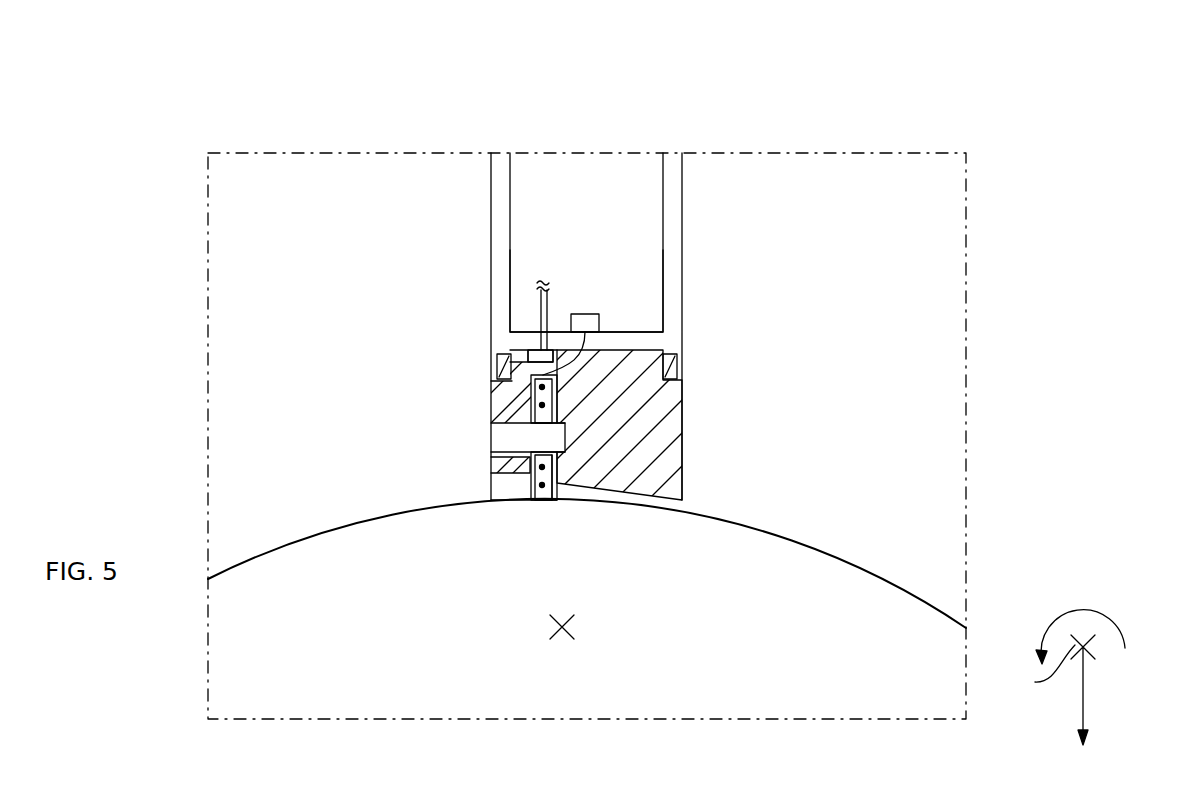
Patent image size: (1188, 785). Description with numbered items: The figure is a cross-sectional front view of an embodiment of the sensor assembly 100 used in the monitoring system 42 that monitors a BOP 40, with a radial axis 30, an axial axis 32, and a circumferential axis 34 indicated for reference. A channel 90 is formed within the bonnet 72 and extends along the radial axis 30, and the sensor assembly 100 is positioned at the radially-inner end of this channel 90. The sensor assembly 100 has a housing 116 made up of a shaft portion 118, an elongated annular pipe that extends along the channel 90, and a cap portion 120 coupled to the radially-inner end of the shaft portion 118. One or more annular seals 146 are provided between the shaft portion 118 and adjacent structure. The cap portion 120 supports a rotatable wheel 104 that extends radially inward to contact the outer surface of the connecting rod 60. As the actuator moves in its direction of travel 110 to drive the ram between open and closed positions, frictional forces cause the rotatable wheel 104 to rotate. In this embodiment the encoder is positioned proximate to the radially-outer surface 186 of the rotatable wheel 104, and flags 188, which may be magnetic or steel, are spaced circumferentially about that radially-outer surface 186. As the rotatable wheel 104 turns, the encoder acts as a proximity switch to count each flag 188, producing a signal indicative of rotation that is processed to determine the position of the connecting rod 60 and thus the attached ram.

The radial axis 30 is at (1085, 690).
The axial axis 32 is at (1040, 671).
The circumferential axis 34 is at (1083, 607).
The BOP 40 is at (537, 355).
The monitoring system 42 is at (733, 50).
The connecting rod 60 is at (806, 702).
The bonnet 72 is at (935, 350).
The channel 90 is at (682, 207).
The sensor assembly 100 is at (745, 128).
The rotatable wheel 104 is at (550, 470).
The direction of travel 110 is at (557, 638).
The housing 116 is at (693, 347).
The shaft portion 118 is at (670, 243).
The cap portion 120 is at (670, 452).
The seal 146 is at (677, 367).
The radially-outer surface 186 is at (587, 314).
The flag 188 is at (542, 405).